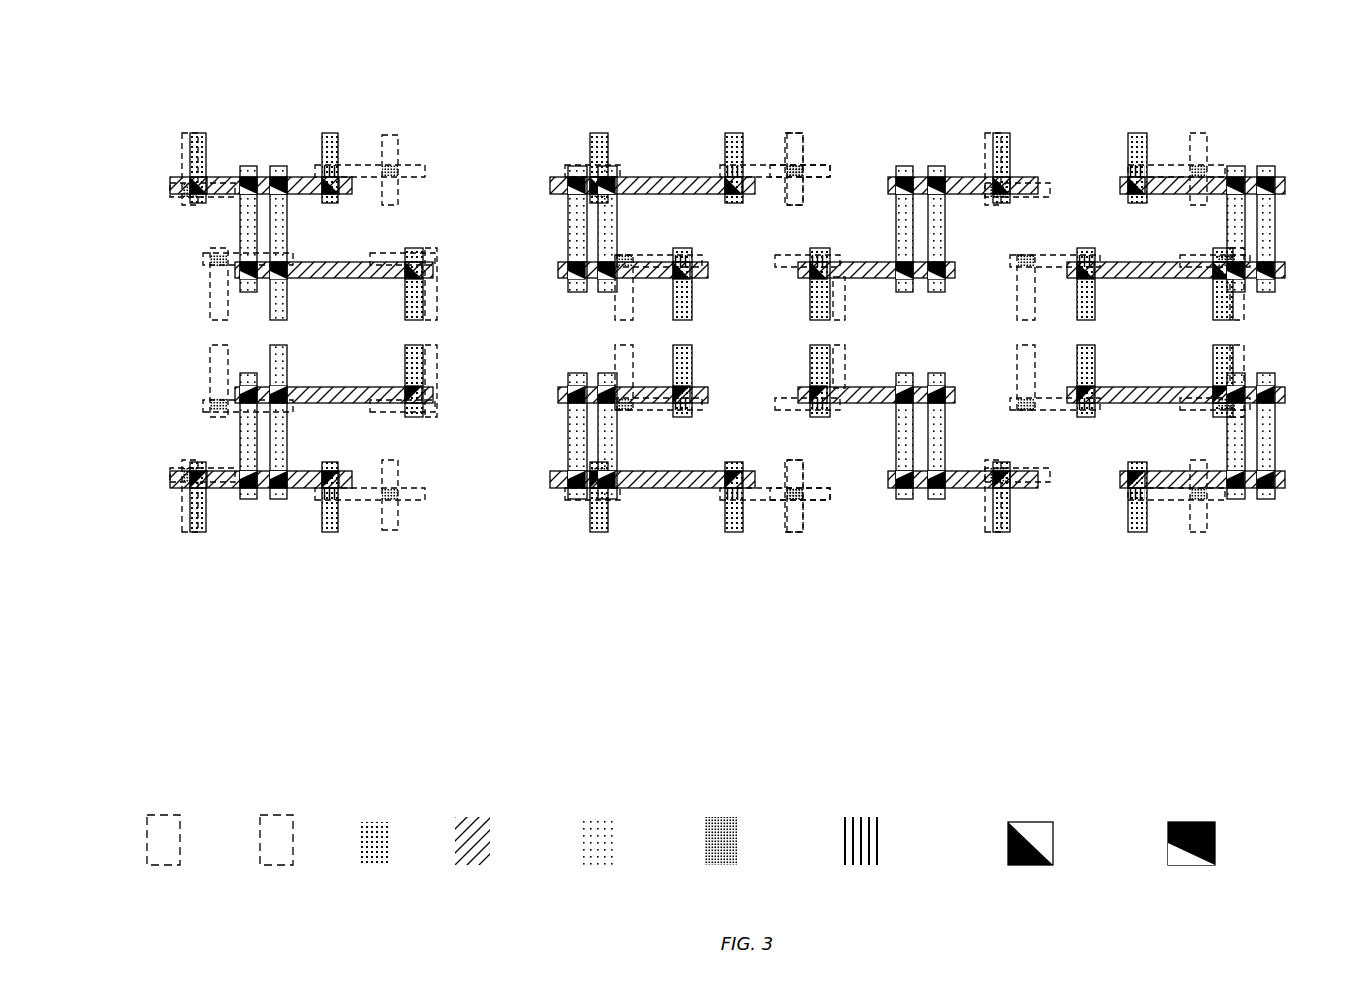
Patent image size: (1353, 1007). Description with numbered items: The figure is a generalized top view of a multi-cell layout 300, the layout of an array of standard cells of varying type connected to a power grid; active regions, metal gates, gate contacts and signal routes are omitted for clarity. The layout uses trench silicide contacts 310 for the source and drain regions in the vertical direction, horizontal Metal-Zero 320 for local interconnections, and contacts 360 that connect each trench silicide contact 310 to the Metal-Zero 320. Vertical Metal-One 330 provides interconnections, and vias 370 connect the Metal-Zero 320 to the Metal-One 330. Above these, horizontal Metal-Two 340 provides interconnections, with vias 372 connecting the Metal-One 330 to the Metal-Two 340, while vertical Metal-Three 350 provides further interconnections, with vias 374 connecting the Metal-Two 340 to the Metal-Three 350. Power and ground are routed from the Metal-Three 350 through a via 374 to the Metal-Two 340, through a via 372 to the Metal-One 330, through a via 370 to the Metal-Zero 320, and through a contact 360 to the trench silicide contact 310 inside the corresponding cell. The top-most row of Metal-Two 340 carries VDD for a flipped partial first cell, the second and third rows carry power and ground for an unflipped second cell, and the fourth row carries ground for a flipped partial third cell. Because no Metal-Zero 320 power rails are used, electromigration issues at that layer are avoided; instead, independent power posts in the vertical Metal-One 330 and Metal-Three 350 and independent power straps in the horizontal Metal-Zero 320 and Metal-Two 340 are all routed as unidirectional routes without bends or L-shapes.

The multi-cell layout 300 is at (1246, 131).
The trench silicide contact 310 is at (405, 85).
The metal 0 320 is at (465, 137).
The metal 1 330 is at (305, 95).
The metal 2 340 is at (475, 817).
The metal 3 350 is at (600, 817).
The contact 360 is at (395, 172).
The via 370 is at (782, 97).
The via 372 is at (1093, 275).
The via 374 is at (572, 287).